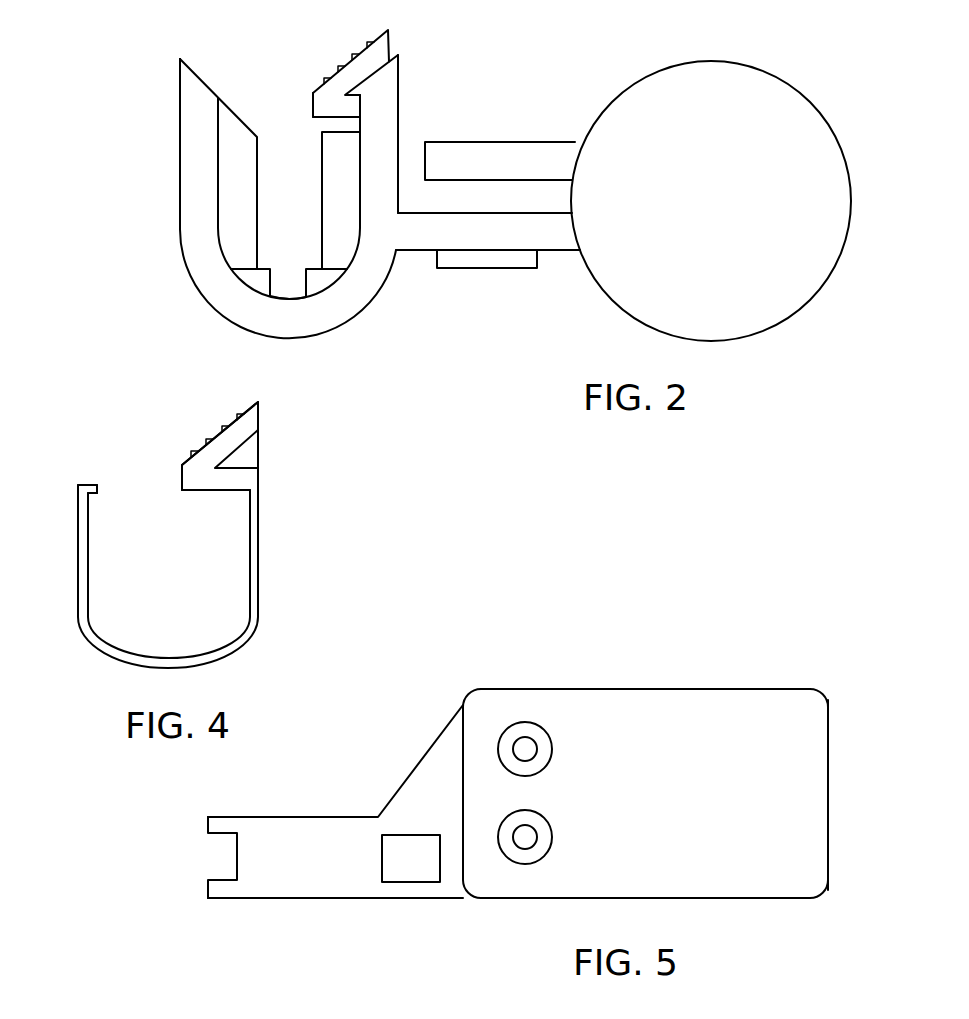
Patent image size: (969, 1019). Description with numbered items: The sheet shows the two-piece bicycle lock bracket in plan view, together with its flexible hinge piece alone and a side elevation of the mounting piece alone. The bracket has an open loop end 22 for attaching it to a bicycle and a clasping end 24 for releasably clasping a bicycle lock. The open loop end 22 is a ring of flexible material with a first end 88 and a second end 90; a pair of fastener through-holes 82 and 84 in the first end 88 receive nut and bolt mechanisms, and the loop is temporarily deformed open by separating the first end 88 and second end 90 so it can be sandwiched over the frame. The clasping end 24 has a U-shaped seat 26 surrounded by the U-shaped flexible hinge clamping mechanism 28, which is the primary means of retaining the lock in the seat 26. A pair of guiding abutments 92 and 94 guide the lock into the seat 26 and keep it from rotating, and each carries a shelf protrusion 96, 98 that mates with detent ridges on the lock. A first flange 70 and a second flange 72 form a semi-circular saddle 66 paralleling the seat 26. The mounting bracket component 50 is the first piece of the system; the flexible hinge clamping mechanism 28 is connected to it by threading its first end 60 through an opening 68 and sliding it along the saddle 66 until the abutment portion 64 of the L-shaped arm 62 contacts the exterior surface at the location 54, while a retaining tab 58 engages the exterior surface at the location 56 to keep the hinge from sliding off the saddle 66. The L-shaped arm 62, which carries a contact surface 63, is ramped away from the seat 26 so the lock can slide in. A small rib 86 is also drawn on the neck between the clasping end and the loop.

In FIG. 2, the open loop end 22 is at (790, 60).
In FIG. 5, the open loop end 22 is at (789, 672).
In FIG. 2, the clasping end 24 is at (181, 304).
In FIG. 2, the U-shaped seat 26 is at (285, 292).
In FIG. 2, the flexible hinge clamping mechanism 28 is at (410, 41).
In FIG. 4, the flexible hinge clamping mechanism 28 is at (72, 524).
In FIG. 5, the mounting bracket component 50 is at (541, 668).
In FIG. 5, the exterior surface location 54 is at (360, 832).
In FIG. 5, the exterior surface location 56 is at (258, 850).
In FIG. 4, the retaining tab 58 is at (93, 497).
In FIG. 4, the first end 60 is at (93, 488).
In FIG. 2, the L-shaped arm 62 is at (313, 103).
In FIG. 4, the L-shaped arm 62 is at (182, 480).
In FIG. 2, the contact surface 63 is at (353, 52).
In FIG. 4, the contact surface 63 is at (217, 435).
In FIG. 4, the abutment portion 64 is at (220, 495).
In FIG. 5, the semi-circular saddle 66 is at (197, 857).
In FIG. 5, the opening 68 is at (412, 880).
In FIG. 5, the first flange 70 is at (236, 817).
In FIG. 2, the second flange 72 is at (193, 226).
In FIG. 5, the second flange 72 is at (240, 898).
In FIG. 5, the fastener through-hole 82 is at (525, 749).
In FIG. 5, the fastener through-hole 84 is at (525, 837).
In FIG. 2, the lower rib 86 is at (455, 270).
In FIG. 2, the first end 88 is at (487, 142).
In FIG. 2, the second end 90 is at (552, 252).
In FIG. 2, the guiding abutment 92 is at (257, 165).
In FIG. 2, the guiding abutment 94 is at (322, 182).
In FIG. 2, the shelf protrusion 96 is at (268, 269).
In FIG. 2, the shelf protrusion 98 is at (308, 269).